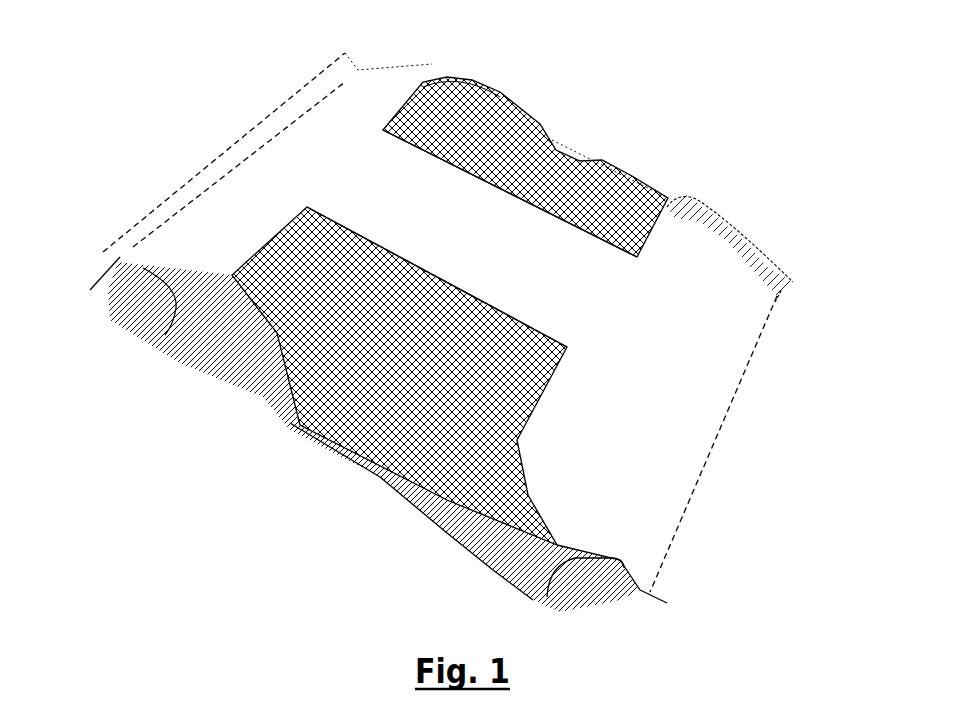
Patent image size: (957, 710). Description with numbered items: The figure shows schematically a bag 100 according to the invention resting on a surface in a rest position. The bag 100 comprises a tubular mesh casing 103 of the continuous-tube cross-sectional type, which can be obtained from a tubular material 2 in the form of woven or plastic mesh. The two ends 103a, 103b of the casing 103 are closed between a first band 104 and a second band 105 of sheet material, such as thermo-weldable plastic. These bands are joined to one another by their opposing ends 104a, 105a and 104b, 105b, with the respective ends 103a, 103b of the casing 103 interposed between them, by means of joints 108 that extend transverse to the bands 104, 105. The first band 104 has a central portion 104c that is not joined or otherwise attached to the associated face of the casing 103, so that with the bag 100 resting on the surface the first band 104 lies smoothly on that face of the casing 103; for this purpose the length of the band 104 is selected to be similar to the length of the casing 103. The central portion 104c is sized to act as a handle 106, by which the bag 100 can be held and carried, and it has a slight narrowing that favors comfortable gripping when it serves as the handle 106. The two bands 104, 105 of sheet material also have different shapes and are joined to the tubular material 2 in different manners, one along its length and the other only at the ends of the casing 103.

The bag 100 is at (687, 171).
The tubular material 2 is at (436, 135).
The tubular mesh casing 103 is at (287, 423).
The end of the casing 103a is at (144, 318).
The end of the casing 103b is at (553, 589).
The first band 104 is at (690, 235).
The end of the first band 104a is at (328, 77).
The end of the first band 104b is at (777, 300).
The central portion 104c is at (502, 250).
The second band 105 is at (385, 475).
The end of the second band 105a is at (81, 290).
The end of the second band 105b is at (640, 590).
The handle 106 is at (515, 262).
The joints 108 is at (228, 170).